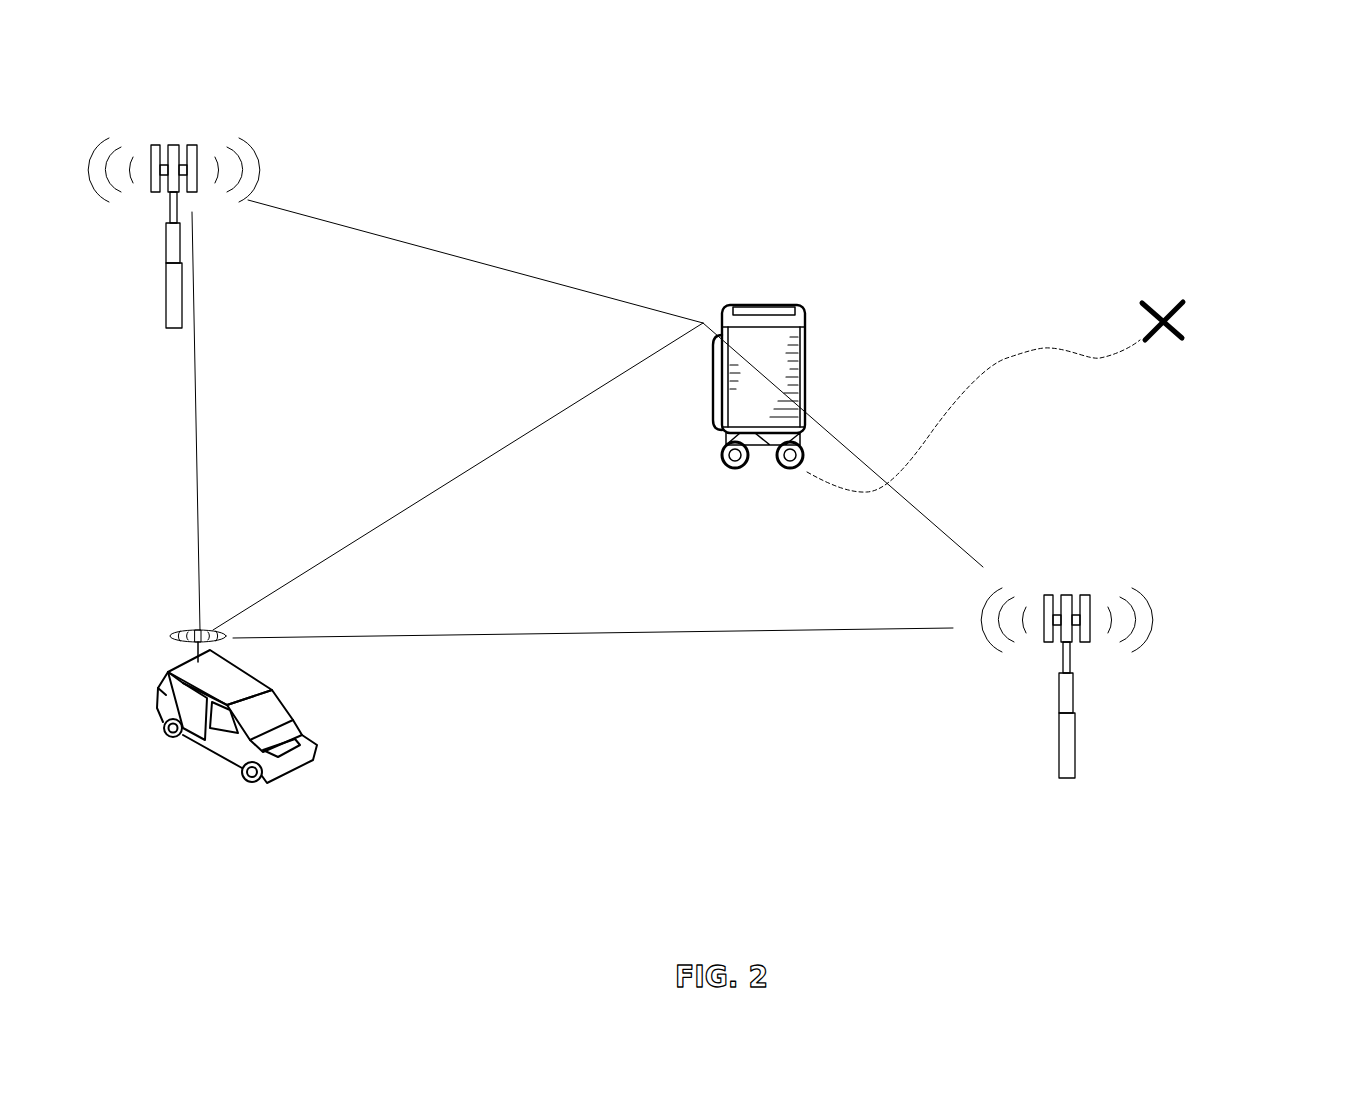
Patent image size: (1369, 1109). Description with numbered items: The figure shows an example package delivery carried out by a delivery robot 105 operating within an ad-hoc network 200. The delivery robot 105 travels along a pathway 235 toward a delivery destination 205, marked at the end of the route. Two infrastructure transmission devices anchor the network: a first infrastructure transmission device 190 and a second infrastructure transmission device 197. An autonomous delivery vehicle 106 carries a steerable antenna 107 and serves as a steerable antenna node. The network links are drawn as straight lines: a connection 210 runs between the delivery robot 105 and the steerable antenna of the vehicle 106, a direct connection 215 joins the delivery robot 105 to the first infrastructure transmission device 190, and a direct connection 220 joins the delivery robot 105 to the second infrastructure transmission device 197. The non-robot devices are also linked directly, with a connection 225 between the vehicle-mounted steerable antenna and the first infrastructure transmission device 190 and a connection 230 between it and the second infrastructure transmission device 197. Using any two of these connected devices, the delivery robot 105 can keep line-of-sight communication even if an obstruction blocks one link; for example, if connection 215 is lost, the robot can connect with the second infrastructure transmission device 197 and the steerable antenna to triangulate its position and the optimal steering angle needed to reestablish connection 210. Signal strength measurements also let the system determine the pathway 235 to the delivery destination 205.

The ad-hoc network 200 is at (1326, 159).
The second infrastructure transmission device 197 is at (172, 138).
The first infrastructure transmission device 190 is at (1065, 617).
The delivery robot 105 is at (765, 305).
The steerable antenna 107 is at (192, 628).
The autonomous delivery vehicle 106 is at (158, 717).
The delivery destination 205 is at (1182, 335).
The connection 210 is at (447, 482).
The direct connection 215 is at (937, 525).
The direct connection 220 is at (425, 250).
The connection 225 is at (598, 635).
The connection 230 is at (200, 487).
The pathway 235 is at (1007, 358).